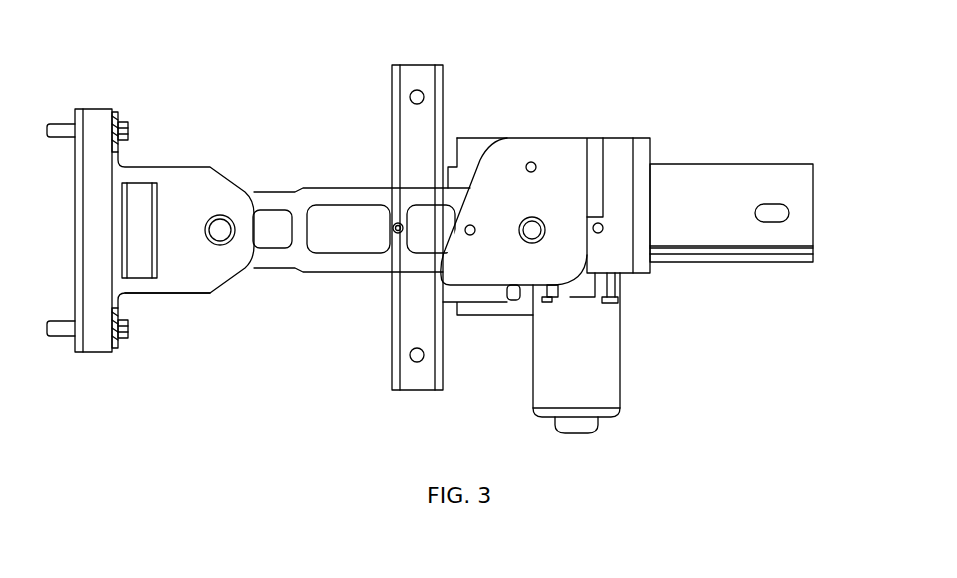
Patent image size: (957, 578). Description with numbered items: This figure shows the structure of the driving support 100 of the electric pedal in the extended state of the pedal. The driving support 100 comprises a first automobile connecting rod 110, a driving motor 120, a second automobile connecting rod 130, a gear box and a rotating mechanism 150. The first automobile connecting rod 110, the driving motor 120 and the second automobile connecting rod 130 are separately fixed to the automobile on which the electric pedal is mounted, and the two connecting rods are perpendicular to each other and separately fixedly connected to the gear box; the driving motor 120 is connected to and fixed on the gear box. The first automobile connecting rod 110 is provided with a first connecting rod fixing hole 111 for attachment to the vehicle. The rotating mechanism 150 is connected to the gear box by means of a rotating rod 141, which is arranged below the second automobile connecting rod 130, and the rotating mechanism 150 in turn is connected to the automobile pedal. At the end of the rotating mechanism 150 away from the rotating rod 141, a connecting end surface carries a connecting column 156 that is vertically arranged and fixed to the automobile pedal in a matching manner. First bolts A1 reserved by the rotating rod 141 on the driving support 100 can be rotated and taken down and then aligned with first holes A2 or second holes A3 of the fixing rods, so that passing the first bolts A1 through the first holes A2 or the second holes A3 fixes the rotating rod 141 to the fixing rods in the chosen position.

The driving support 100 is at (623, 139).
The first automobile connecting rod 110 is at (768, 191).
The first connecting rod fixing hole 111 is at (779, 211).
The driving motor 120 is at (599, 387).
The second automobile connecting rod 130 is at (407, 71).
The rotating rod 141 is at (383, 187).
The rotating mechanism 150 is at (152, 170).
The connecting column 156 is at (128, 120).
The first bolts A1 is at (396, 234).
The first holes A2 is at (471, 236).
The second holes A3 is at (533, 162).